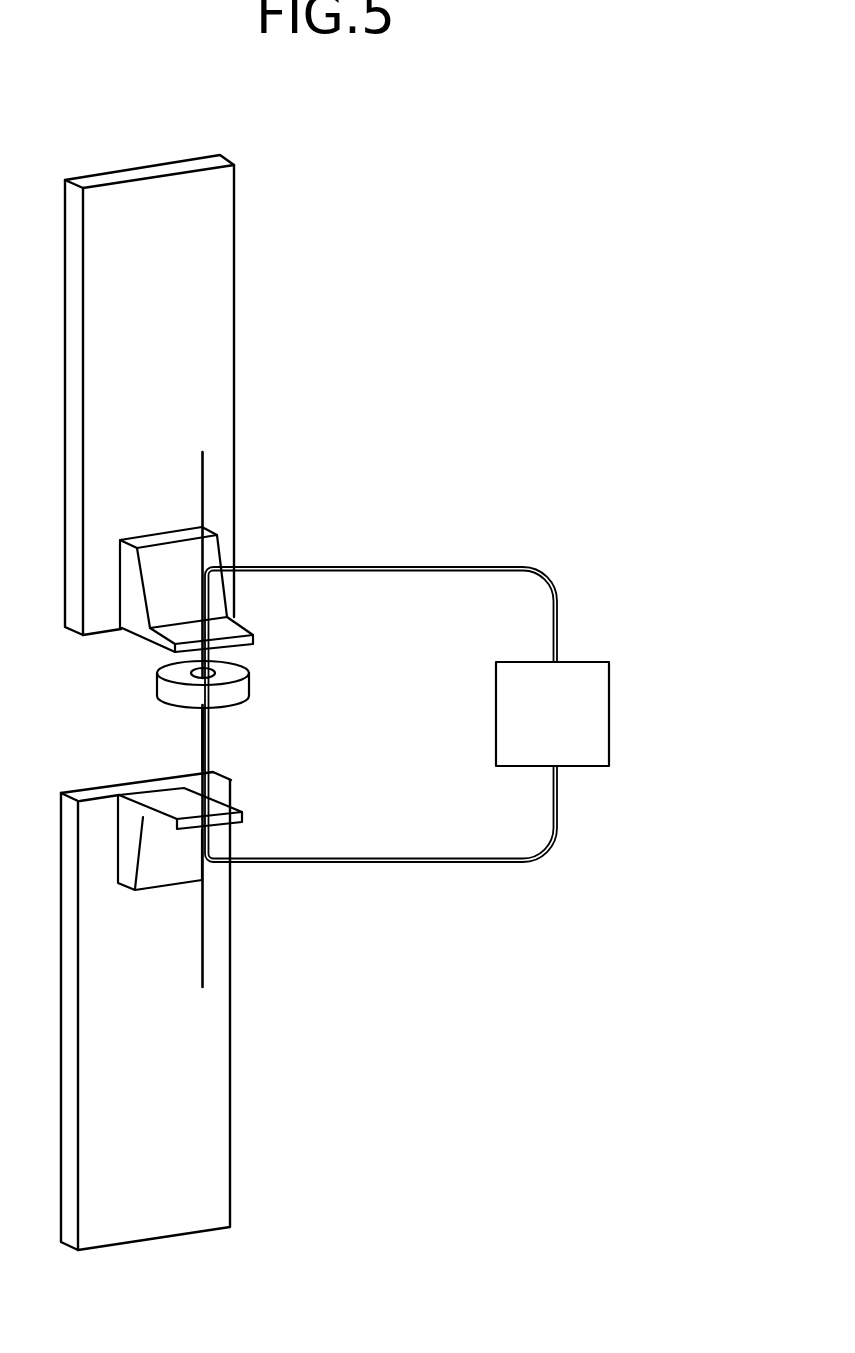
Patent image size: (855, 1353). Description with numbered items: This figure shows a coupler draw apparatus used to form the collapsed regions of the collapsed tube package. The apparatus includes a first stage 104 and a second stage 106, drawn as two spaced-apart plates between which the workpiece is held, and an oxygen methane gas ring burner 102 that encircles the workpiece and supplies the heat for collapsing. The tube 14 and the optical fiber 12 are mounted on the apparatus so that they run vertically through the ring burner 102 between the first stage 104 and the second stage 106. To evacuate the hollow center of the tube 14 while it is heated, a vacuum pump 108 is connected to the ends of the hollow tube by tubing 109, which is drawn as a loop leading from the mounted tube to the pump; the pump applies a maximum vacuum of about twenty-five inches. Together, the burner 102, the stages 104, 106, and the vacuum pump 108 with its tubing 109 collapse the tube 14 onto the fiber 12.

The optical fiber 12 is at (204, 943).
The tube 14 is at (202, 738).
The oxygen methane gas ring burner 102 is at (250, 683).
The first stage 104 is at (234, 336).
The second stage 106 is at (229, 1138).
The vacuum pump 108 is at (609, 715).
The tubing 109 is at (415, 567).